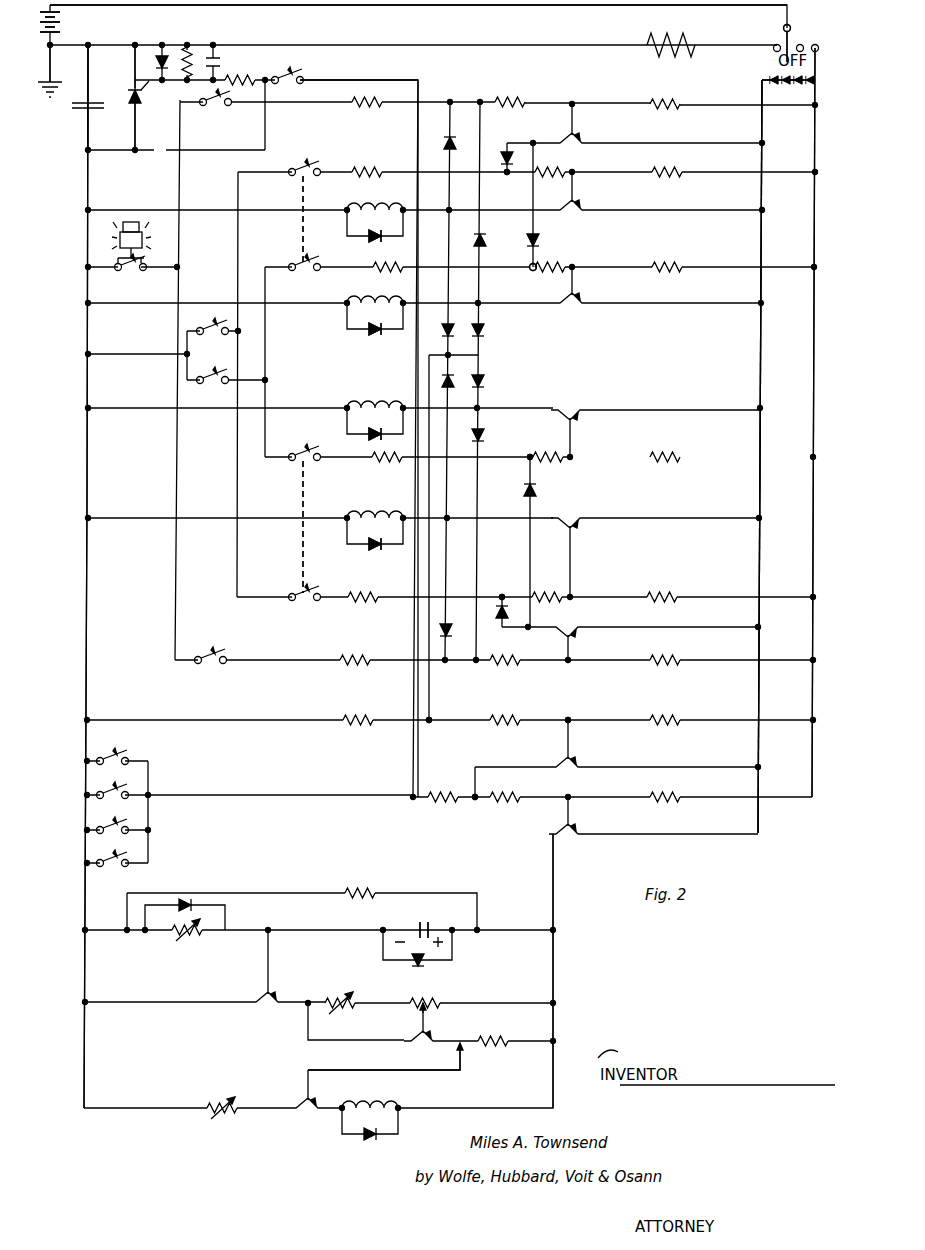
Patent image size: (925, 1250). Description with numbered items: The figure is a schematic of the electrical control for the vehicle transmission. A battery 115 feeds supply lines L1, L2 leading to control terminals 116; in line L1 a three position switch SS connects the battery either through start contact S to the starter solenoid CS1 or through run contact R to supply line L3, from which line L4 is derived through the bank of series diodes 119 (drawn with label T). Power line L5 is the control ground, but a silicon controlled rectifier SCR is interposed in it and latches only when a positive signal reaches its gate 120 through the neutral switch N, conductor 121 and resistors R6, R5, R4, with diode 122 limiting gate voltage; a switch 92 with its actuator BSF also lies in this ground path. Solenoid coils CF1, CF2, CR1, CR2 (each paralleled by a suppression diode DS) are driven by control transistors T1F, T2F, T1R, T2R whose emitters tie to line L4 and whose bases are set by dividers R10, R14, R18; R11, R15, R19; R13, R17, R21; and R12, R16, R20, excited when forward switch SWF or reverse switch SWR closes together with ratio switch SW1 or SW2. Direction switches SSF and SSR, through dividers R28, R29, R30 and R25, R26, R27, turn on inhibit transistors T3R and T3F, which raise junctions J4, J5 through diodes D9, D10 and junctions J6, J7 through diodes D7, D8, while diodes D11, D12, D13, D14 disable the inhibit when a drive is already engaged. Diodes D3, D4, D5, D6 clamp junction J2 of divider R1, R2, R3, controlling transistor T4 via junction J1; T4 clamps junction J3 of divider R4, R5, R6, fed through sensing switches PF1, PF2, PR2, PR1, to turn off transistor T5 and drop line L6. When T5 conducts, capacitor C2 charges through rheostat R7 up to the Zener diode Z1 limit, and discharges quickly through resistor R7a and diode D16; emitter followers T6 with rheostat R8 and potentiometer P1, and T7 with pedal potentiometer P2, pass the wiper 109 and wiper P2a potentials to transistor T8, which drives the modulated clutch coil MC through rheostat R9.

The battery 115 is at (72, 22).
The supply line L1 is at (268, 9).
The supply line L2 is at (61, 63).
The control terminals 116 is at (828, 48).
The gate 120 is at (133, 90).
The silicon controlled rectifier SCR is at (152, 115).
The diode 122 is at (178, 37).
The neutral switch N is at (292, 70).
The conductor 121 is at (402, 76).
The reverse direction switch SSR is at (218, 108).
The switch actuator BSF is at (114, 240).
The switch 92 is at (128, 275).
The forward switch SWF is at (303, 218).
The reverse switch SWR is at (295, 527).
The first ratio switch SW1 is at (206, 321).
The second ratio switch SW2 is at (207, 388).
The forward direction switch SSF is at (210, 666).
The resistor R27 is at (364, 114).
The resistor R18 is at (366, 163).
The resistor R19 is at (388, 258).
The resistor R20 is at (385, 468).
The resistor R21 is at (361, 588).
The resistor R30 is at (357, 651).
The resistor R3 is at (358, 711).
The resistor R6 is at (443, 788).
The resistor R5 is at (505, 806).
The resistor R2 is at (505, 711).
The resistor R29 is at (505, 651).
The resistor R26 is at (509, 94).
The resistor R25 is at (667, 96).
The resistor R14 is at (545, 163).
The resistor R10 is at (667, 164).
The resistor R15 is at (551, 258).
The resistor R11 is at (667, 258).
The resistor R16 is at (548, 448).
The resistor R12 is at (666, 448).
The resistor R17 is at (547, 589).
The resistor R13 is at (662, 589).
The resistor R28 is at (664, 651).
The resistor R1 is at (665, 711).
The resistor R4 is at (665, 789).
The starter solenoid CS1 is at (671, 39).
The start contact S is at (775, 45).
The three position switch SS is at (793, 37).
The run contact R is at (806, 43).
The thermal sensing diodes T is at (818, 80).
The series diodes 119 is at (804, 90).
The auxiliary voltage supply line L4 is at (770, 136).
The supply line L3 is at (818, 232).
The power line L5 is at (80, 539).
The line L6 is at (556, 964).
The diode D11 is at (445, 135).
The diode D7 is at (503, 152).
The junction J6 is at (501, 184).
The diode D12 is at (495, 233).
The diode D8 is at (540, 234).
The junction J7 is at (530, 272).
The diode D3 is at (443, 325).
The diode D4 is at (486, 330).
The diode D5 is at (484, 377).
The diode D6 is at (452, 382).
The diode D14 is at (483, 437).
The junction J5 is at (527, 462).
The diode D10 is at (536, 488).
The junction J4 is at (502, 592).
The diode D9 is at (496, 614).
The diode D13 is at (456, 620).
The junction J2 is at (429, 725).
The junction J1 is at (570, 714).
The junction J3 is at (473, 803).
The solenoid coil CF1 is at (386, 197).
The solenoid coil CF2 is at (375, 306).
The solenoid coil CR2 is at (375, 410).
The solenoid coil CR1 is at (375, 520).
The suppression diode DS is at (355, 698).
The auxiliary control transistor T3F is at (580, 128).
The control transistor T1F is at (580, 196).
The control transistor T2F is at (583, 295).
The control transistor T2R is at (576, 417).
The control transistor T1R is at (576, 538).
The auxiliary control transistor T3R is at (581, 641).
The transistor T4 is at (574, 757).
The transistor T5 is at (574, 826).
The transistor T6 is at (260, 988).
The transistor T7 is at (408, 1030).
The transistor T8 is at (300, 1092).
The wiper 109 is at (426, 1026).
The clutch-engagement sensing switch PF1 is at (109, 749).
The clutch-engagement sensing switch PF2 is at (109, 784).
The clutch-engagement sensing switch PR2 is at (109, 819).
The clutch-engagement sensing switch PR1 is at (109, 852).
The diode D16 is at (183, 898).
The resistor R7a is at (357, 884).
The rheostat R7 is at (187, 938).
The rheostat R8 is at (338, 996).
The potentiometer P1 is at (432, 994).
The pedal-control potentiometer P2 is at (490, 1034).
The wiper P2a is at (462, 1060).
The rheostat R9 is at (222, 1117).
The valve coil MC is at (374, 1098).
The capacitor C2 is at (431, 921).
The Zener diode Z1 is at (410, 966).